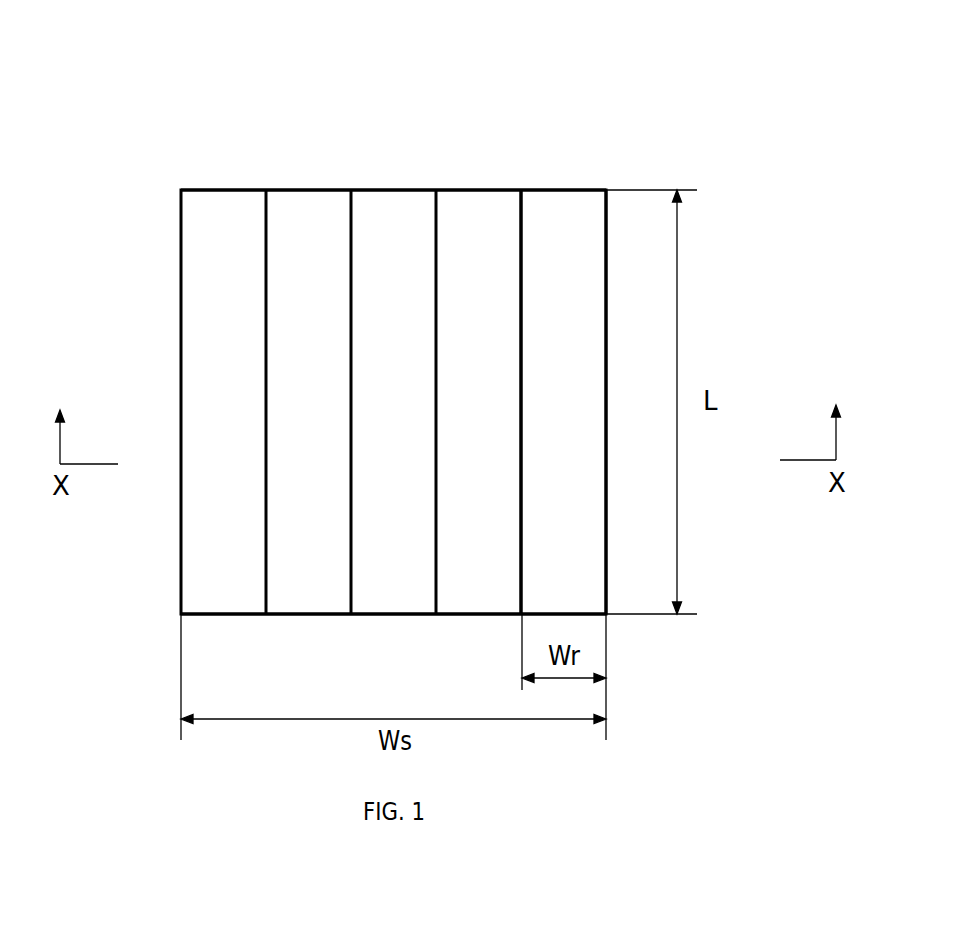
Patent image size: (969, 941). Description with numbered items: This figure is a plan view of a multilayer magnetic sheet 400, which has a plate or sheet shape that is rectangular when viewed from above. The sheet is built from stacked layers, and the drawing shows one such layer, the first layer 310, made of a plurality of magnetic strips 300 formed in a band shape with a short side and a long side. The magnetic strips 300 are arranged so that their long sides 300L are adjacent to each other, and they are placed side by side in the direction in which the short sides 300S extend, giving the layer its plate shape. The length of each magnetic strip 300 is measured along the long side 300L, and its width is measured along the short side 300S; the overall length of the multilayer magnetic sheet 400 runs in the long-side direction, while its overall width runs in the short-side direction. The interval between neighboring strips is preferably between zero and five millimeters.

The multilayer magnetic sheet 400 is at (700, 92).
The first layer 310 is at (150, 233).
The magnetic strip 300 is at (224, 209).
The short side 300S is at (585, 190).
The long side 300L is at (606, 313).